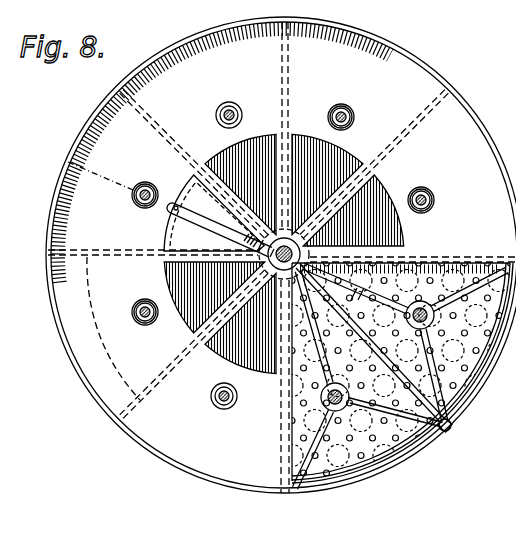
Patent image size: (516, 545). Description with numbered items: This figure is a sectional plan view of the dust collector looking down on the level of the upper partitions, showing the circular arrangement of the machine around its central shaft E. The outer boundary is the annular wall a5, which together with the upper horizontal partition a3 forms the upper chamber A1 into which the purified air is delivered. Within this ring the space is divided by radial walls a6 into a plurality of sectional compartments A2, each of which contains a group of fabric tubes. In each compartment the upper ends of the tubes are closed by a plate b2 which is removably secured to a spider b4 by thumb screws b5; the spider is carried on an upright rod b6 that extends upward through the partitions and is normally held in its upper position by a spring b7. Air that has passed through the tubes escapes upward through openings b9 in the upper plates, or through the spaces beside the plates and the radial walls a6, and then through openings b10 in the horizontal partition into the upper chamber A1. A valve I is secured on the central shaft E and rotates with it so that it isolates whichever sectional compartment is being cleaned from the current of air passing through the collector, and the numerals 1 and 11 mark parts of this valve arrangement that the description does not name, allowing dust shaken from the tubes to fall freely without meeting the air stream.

The upper chamber A1 is at (473, 110).
The sectional compartment A2 is at (364, 477).
The upper horizontal partition a3 is at (283, 255).
The annular wall a5 is at (413, 57).
The radial wall a6 is at (411, 472).
The closing plate b2 is at (310, 474).
The spider b4 is at (470, 288).
The thumb screw b5 is at (445, 430).
The upright rod b6 is at (242, 114).
The spring b7 is at (354, 120).
The openings b9 is at (289, 441).
The openings b10 is at (270, 138).
The central shaft E is at (262, 262).
The valve I is at (197, 181).
The lever 1 is at (218, 222).
The bolt axis line 11 is at (68, 162).